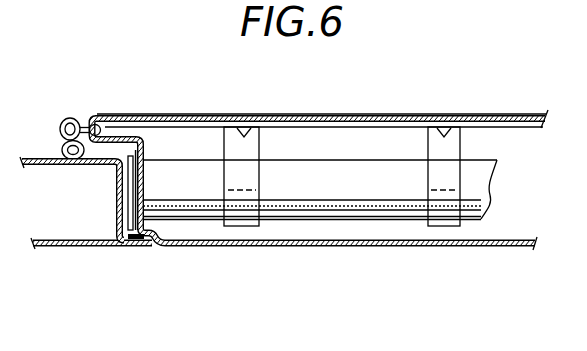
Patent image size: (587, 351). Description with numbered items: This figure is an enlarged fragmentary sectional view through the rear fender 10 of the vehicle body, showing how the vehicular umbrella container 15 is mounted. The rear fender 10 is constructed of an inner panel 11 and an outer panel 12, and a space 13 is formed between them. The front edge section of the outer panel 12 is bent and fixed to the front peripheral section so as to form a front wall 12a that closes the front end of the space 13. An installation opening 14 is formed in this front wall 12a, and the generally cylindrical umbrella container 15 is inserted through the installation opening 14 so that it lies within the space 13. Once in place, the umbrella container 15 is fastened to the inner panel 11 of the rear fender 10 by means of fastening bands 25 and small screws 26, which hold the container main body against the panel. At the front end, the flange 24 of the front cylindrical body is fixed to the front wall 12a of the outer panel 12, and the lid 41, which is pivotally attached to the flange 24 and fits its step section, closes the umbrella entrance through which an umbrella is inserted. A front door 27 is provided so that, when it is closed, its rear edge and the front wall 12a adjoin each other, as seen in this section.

The rear fender 10 is at (339, 261).
The inner panel 11 is at (311, 126).
The outer panel 12 is at (363, 246).
The front wall 12a is at (125, 137).
The space 13 is at (500, 136).
The installation opening 14 is at (143, 165).
The umbrella container 15 is at (393, 222).
The flange 24 is at (136, 207).
The fastening band 25 is at (256, 150).
The small screw 26 is at (252, 131).
The front door 27 is at (95, 249).
The lid 41 is at (130, 198).